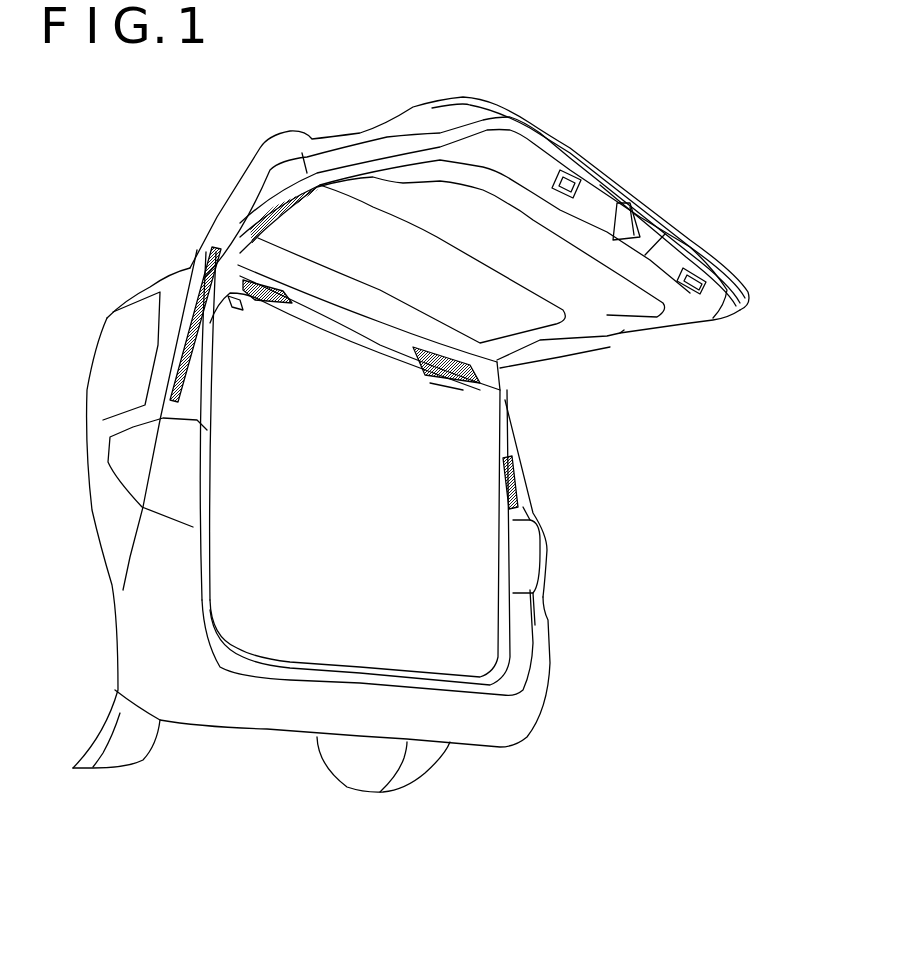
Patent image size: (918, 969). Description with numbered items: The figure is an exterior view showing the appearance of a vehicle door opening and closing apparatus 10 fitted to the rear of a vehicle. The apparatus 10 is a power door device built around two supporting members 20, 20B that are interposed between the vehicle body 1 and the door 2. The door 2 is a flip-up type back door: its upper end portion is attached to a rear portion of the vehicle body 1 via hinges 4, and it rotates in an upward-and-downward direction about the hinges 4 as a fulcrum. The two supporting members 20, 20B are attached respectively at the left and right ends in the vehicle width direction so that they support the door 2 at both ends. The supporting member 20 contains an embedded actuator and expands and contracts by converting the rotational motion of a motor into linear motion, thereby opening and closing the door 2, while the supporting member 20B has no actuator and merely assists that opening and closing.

The vehicle body 1 is at (164, 293).
The door 2 is at (633, 184).
The hinges 4 is at (262, 303).
The vehicle door opening and closing apparatus 10 is at (582, 491).
The supporting member 20 is at (512, 424).
The supporting member 20B is at (213, 323).